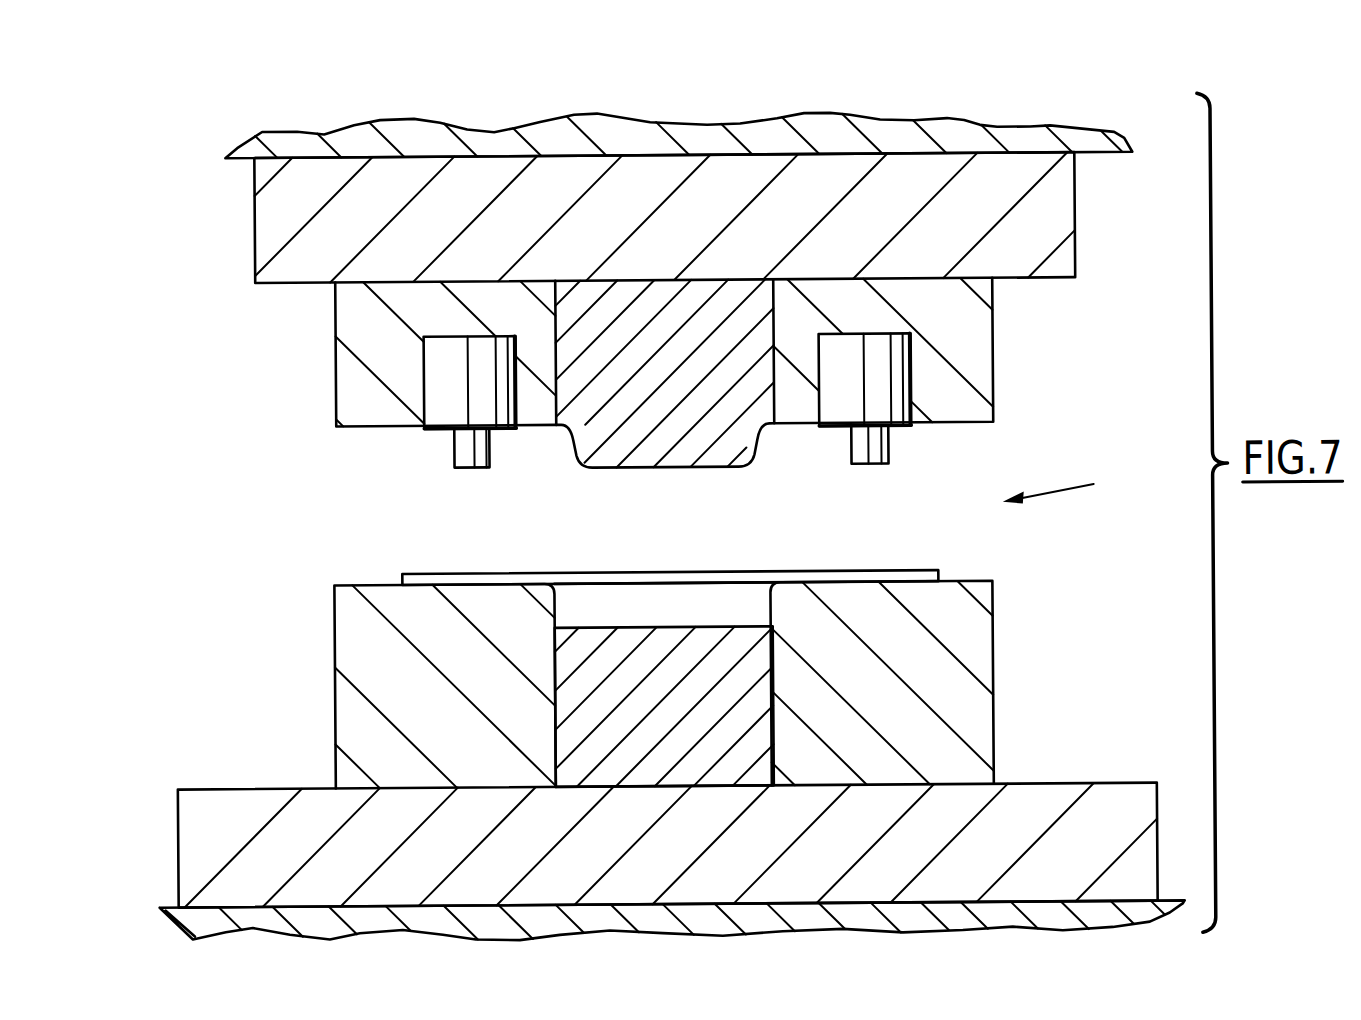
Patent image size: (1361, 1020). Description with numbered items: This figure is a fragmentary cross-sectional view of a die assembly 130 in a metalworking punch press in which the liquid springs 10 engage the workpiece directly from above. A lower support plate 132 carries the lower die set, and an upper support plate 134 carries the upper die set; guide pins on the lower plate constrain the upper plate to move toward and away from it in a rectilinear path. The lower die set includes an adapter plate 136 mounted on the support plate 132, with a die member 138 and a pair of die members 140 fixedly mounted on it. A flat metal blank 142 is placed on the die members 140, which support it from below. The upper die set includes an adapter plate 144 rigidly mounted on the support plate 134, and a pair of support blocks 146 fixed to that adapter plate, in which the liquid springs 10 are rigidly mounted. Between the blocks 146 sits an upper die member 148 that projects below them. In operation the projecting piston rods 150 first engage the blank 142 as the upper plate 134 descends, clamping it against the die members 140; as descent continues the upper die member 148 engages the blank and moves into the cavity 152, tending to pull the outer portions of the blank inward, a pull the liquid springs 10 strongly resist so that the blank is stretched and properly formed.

The liquid spring 10 is at (445, 400).
The die assembly 130 is at (1074, 483).
The support plate 132 is at (1173, 905).
The support plate 134 is at (1030, 137).
The adapter plate 136 is at (1103, 812).
The die member 138 is at (635, 663).
The die members 140 is at (362, 658).
The blank 142 is at (890, 578).
The adapter plate 144 is at (1056, 262).
The support blocks 146 is at (347, 370).
The upper die member 148 is at (680, 448).
The piston rods 150 is at (467, 453).
The cavity 152 is at (718, 598).